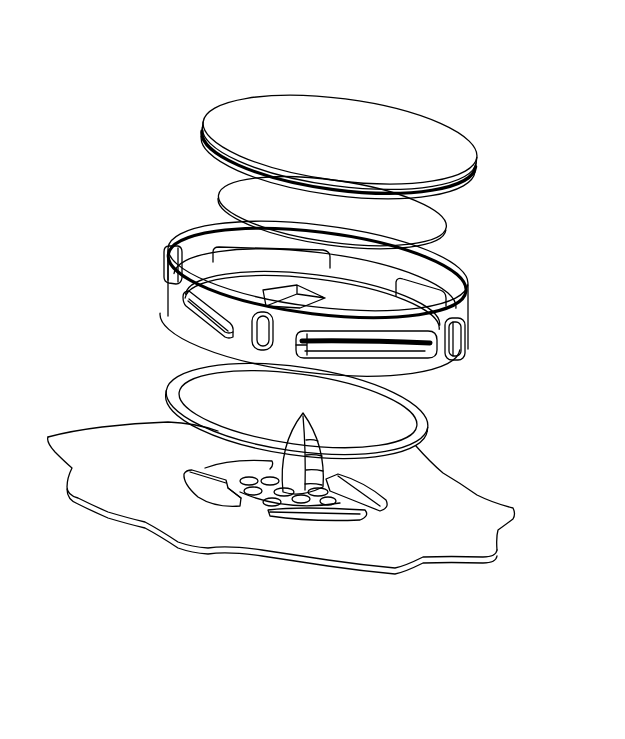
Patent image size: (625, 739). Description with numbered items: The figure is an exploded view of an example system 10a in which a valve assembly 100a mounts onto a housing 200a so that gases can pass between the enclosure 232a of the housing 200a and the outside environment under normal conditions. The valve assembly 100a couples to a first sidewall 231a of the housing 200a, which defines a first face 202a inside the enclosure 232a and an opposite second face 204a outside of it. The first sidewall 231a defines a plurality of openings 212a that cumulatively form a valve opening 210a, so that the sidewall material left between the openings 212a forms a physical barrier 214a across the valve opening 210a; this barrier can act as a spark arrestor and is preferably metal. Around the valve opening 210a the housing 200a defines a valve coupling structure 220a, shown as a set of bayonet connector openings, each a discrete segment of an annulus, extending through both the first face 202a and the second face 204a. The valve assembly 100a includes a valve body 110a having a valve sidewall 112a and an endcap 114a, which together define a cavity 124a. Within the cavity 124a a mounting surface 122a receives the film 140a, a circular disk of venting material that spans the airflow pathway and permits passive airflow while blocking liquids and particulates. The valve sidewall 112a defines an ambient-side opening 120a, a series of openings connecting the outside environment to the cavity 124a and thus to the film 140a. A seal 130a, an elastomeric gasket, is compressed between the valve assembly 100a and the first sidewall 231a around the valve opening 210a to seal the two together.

The system 10a is at (226, 58).
The valve assembly 100a is at (340, 50).
The valve body 110a is at (212, 130).
The endcap 114a is at (447, 163).
The mounting surface 122a is at (220, 273).
The film 140a is at (427, 232).
The cavity 124a is at (373, 275).
The seal 130a is at (178, 383).
The valve sidewall 112a is at (465, 308).
The ambient-side opening 120a is at (412, 380).
The second face 204a is at (80, 426).
The openings 212a is at (305, 441).
The physical barrier 214a is at (225, 465).
The housing 200a is at (450, 488).
The first face 202a is at (86, 523).
The valve opening 210a is at (239, 527).
The valve coupling structure 220a is at (318, 553).
The first sidewall 231a is at (480, 517).
The enclosure 232a is at (459, 635).